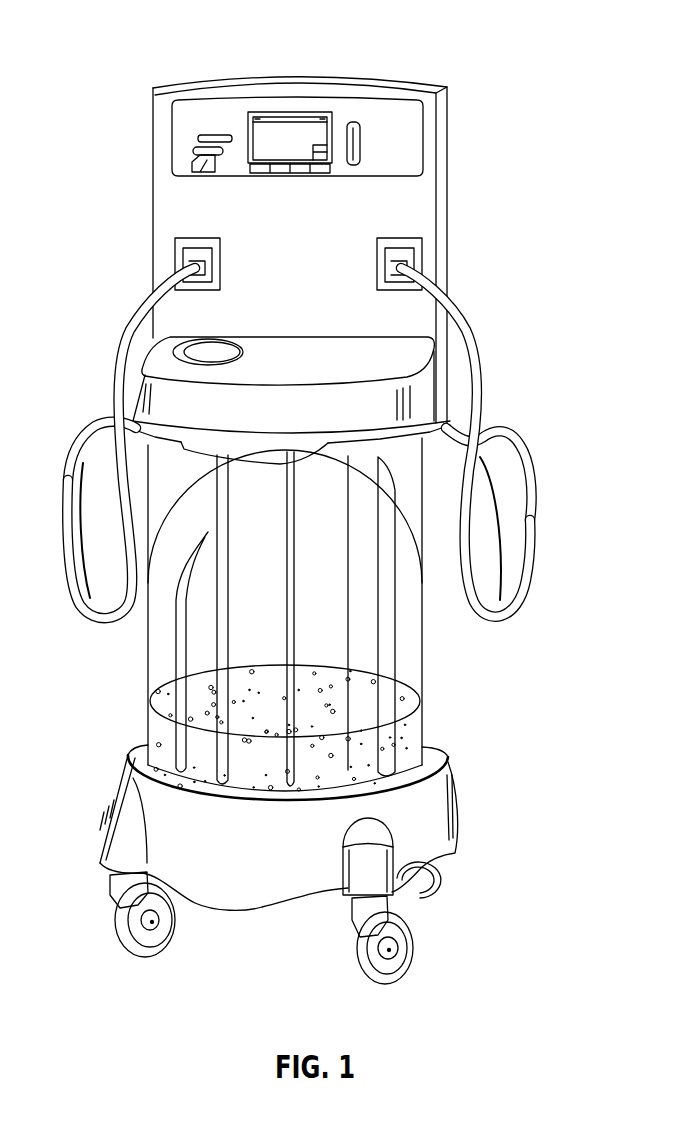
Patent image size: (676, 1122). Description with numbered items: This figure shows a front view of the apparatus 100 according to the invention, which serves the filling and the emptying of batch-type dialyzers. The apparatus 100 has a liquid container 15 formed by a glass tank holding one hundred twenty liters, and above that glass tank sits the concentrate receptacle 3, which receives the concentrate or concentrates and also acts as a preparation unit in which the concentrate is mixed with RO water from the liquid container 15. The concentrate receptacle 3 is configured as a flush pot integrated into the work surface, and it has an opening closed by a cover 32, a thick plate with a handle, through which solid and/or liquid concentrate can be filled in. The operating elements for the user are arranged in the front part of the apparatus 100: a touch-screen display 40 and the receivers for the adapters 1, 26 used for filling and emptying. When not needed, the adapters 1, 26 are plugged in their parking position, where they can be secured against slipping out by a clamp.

The apparatus 100 is at (281, 257).
The touch-screen display 40 is at (287, 131).
The adapter 1 is at (190, 252).
The adapter 26 is at (400, 252).
The concentrate receptacle 3 is at (344, 366).
The cover 32 is at (217, 349).
The liquid container 15 is at (330, 621).